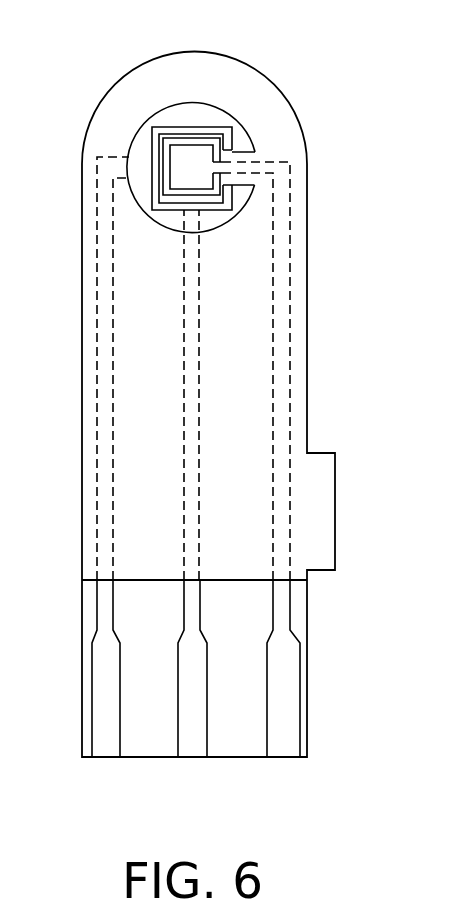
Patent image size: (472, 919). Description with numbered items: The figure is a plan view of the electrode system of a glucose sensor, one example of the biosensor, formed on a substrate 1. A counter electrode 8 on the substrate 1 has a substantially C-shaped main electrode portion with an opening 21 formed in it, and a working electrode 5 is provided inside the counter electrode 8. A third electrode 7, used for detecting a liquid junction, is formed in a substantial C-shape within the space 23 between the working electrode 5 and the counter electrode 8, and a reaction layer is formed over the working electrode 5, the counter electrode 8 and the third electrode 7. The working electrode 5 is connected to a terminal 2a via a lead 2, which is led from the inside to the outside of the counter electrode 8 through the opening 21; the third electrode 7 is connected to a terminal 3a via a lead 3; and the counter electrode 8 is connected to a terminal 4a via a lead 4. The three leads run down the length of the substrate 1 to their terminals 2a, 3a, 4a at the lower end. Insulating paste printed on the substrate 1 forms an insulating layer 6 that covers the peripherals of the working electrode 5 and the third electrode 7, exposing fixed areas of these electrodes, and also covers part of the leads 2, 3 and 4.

The substrate 1 is at (233, 745).
The lead 2 is at (290, 505).
The lead 3 is at (200, 385).
The lead 4 is at (97, 400).
The working electrode 5 is at (183, 162).
The insulating layer 6 is at (252, 298).
The third electrode 7 is at (193, 135).
The counter electrode 8 is at (217, 118).
The opening 21 is at (262, 153).
The space 23 is at (166, 124).
The terminal 2a is at (280, 742).
The terminal 3a is at (193, 745).
The terminal 4a is at (105, 747).